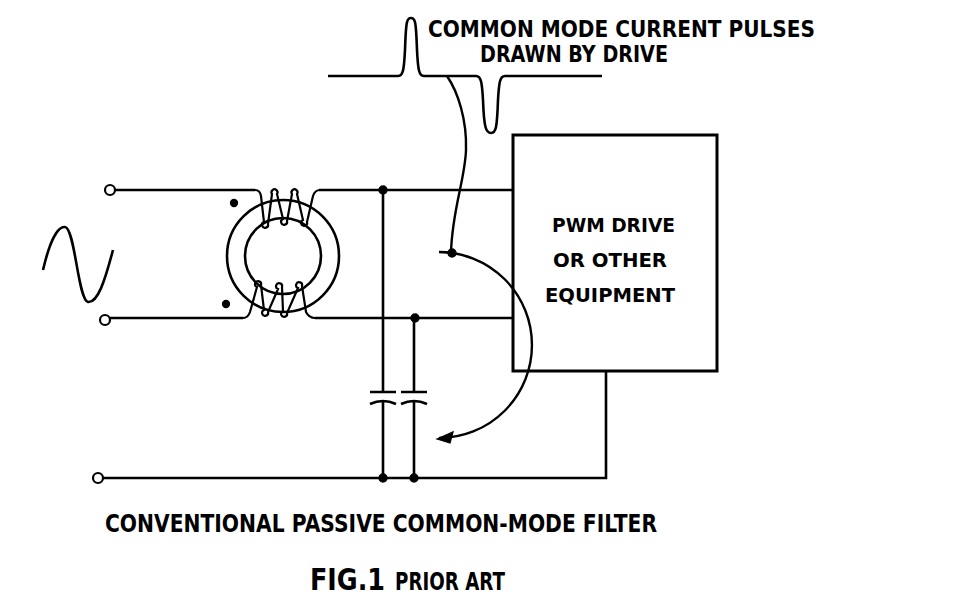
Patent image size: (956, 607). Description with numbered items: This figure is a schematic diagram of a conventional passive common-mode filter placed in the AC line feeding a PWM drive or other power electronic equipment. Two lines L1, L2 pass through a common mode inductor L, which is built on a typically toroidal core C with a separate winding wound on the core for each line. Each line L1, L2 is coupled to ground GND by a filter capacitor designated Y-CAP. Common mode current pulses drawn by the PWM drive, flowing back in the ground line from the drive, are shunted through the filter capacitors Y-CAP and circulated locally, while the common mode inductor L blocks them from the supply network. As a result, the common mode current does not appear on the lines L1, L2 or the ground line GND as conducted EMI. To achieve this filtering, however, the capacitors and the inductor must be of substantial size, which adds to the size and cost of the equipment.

The line L1 is at (290, 191).
The line L2 is at (289, 328).
The common mode inductor L is at (284, 224).
The toroidal core C is at (228, 249).
The filter capacitor Y-CAP is at (395, 334).
The ground GND is at (318, 431).